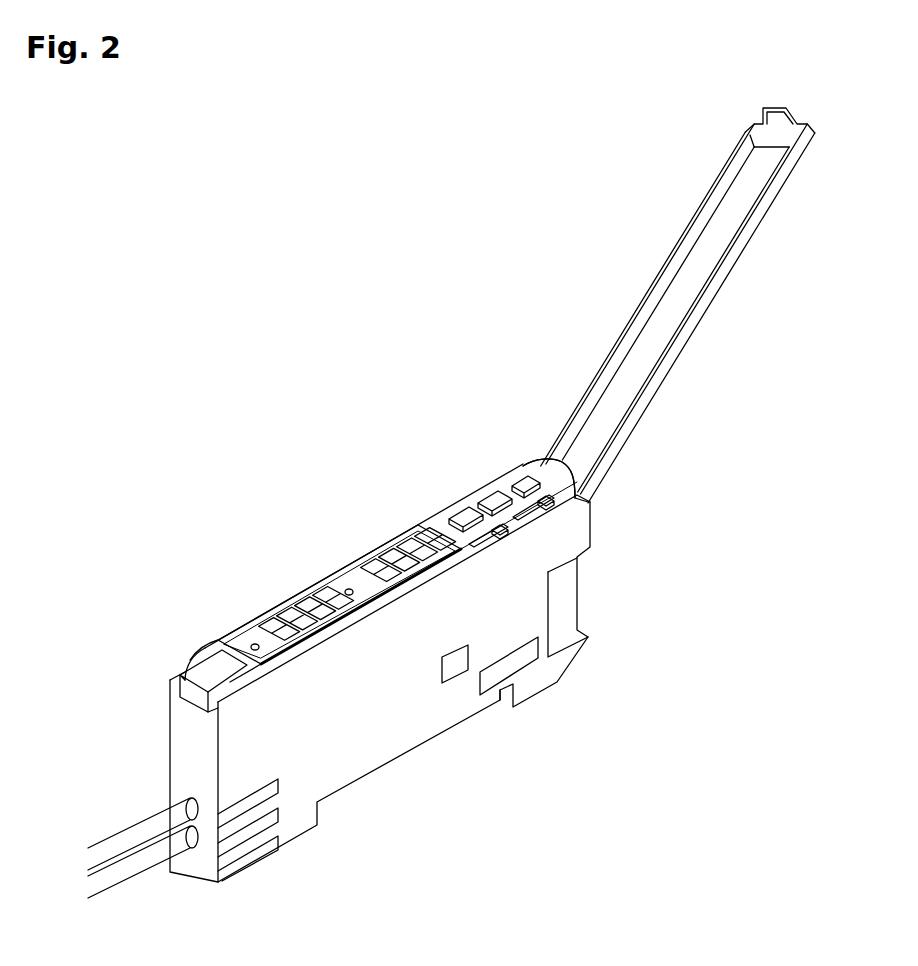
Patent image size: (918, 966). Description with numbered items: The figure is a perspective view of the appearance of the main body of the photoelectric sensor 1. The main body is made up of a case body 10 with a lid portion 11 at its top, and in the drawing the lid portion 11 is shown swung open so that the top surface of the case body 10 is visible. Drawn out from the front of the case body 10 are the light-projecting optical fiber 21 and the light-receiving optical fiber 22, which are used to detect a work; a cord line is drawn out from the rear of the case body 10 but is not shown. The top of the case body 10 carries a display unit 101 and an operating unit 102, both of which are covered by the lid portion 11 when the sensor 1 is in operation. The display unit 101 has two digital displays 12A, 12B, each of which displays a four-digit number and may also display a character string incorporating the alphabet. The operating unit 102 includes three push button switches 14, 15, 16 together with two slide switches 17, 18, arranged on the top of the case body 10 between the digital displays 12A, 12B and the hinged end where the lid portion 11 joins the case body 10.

The photoelectric sensor 1 is at (508, 325).
The case body 10 is at (432, 730).
The lid portion 11 is at (677, 313).
The digital display 12A is at (275, 615).
The digital display 12B is at (400, 533).
The display unit 101 is at (340, 583).
The operating unit 102 is at (510, 477).
The push button switch 14 is at (485, 490).
The push button switch 15 is at (453, 512).
The push button switch 16 is at (525, 475).
The slide switch 17 is at (498, 537).
The slide switch 18 is at (543, 513).
The light-projecting optical fiber 21 is at (135, 832).
The light-receiving optical fiber 22 is at (135, 878).